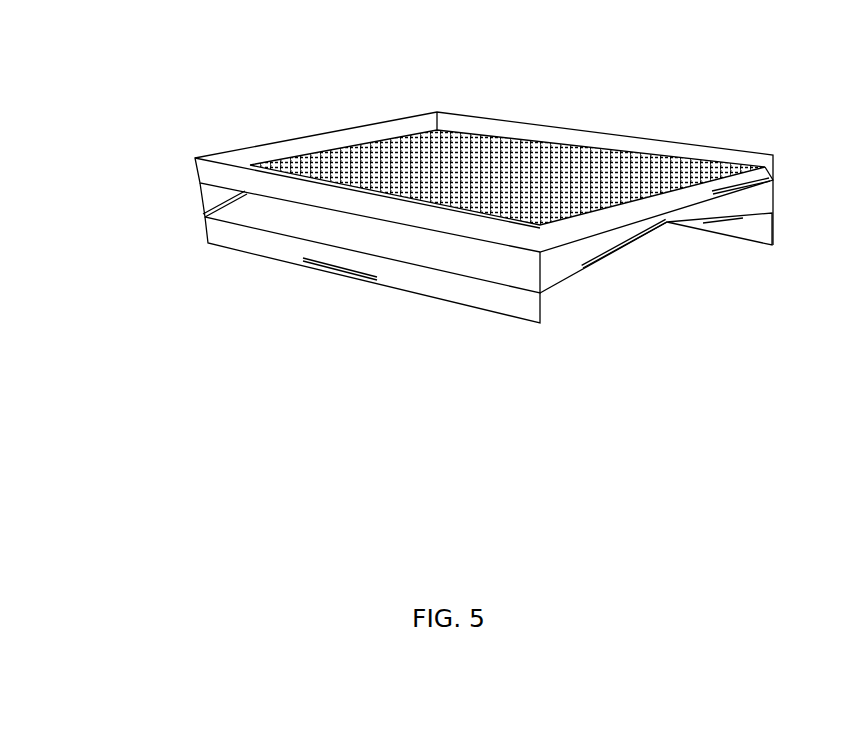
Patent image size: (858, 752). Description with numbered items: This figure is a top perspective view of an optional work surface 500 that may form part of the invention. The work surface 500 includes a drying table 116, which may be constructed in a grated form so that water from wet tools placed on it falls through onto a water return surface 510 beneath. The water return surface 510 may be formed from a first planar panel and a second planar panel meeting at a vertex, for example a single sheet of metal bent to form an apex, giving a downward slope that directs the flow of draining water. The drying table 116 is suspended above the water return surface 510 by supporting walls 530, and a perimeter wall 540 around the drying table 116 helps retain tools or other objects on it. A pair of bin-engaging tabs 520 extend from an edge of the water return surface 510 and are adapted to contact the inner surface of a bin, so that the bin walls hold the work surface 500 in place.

The drying table 116 is at (378, 168).
The work surface 500 is at (742, 93).
The water return surface 510 is at (277, 212).
The bin-engaging tabs 520 is at (287, 248).
The supporting walls 530 is at (200, 195).
The perimeter wall 540 is at (470, 120).